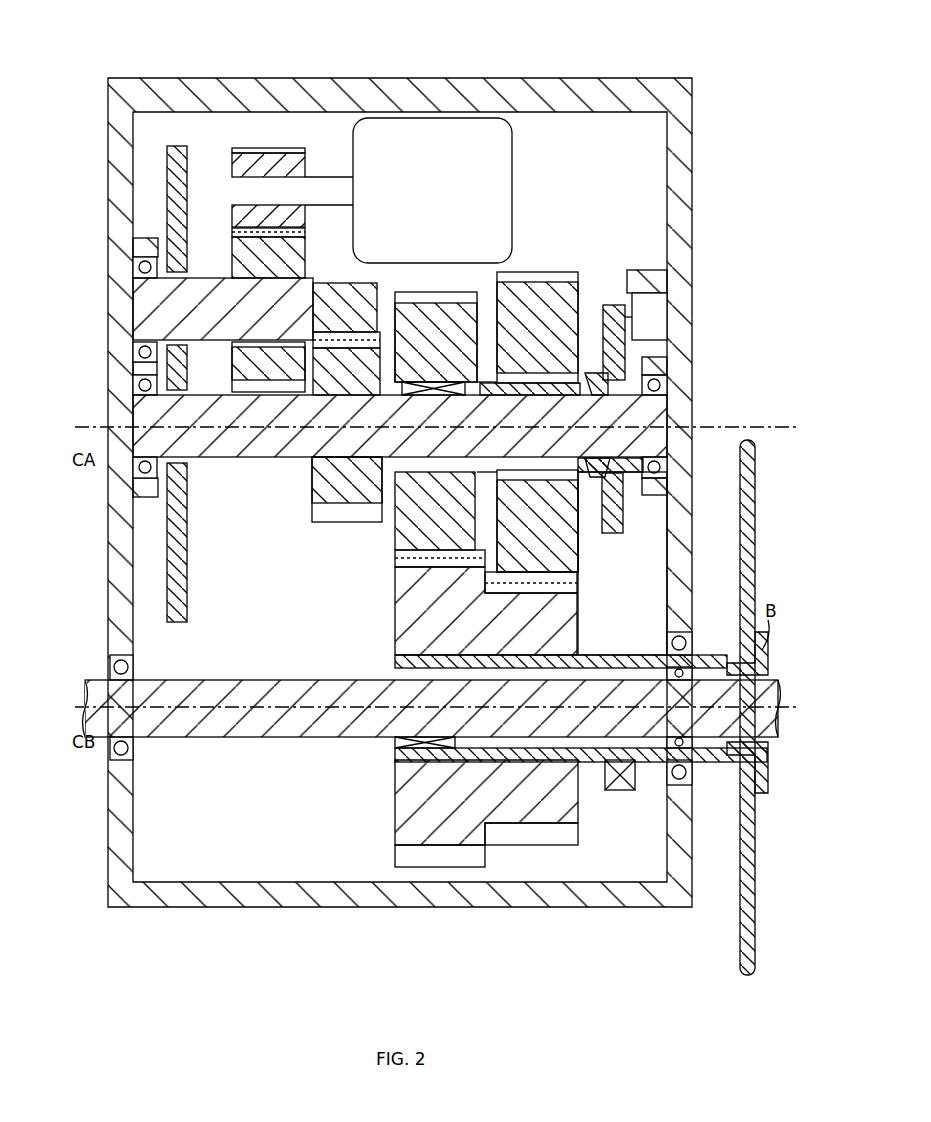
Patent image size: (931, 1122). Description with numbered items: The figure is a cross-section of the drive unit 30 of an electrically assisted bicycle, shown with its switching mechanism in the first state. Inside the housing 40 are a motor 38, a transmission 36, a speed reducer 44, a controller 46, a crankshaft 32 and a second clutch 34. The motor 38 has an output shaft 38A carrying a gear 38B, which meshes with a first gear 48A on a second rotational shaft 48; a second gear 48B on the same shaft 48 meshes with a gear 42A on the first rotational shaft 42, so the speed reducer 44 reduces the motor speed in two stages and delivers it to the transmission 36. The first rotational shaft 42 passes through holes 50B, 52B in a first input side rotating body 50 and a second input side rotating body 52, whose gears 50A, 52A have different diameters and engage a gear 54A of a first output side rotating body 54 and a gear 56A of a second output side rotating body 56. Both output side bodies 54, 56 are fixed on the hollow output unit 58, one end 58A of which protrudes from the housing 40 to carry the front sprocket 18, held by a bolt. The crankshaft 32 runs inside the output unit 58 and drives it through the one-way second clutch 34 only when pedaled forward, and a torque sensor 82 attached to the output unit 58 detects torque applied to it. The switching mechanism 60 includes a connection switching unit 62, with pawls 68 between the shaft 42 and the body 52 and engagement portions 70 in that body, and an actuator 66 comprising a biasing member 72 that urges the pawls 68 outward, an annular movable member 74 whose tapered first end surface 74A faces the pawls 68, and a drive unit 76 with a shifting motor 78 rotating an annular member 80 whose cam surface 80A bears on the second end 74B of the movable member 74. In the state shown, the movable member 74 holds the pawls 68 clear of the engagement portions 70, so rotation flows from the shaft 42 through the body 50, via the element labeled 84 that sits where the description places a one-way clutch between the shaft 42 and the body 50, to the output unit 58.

The drive unit 30 is at (722, 57).
The housing 40 is at (692, 152).
The motor 38 is at (512, 163).
The output shaft 38A is at (332, 176).
The gear 38B is at (262, 147).
The speed reducer 44 is at (222, 270).
The controller 46 is at (187, 572).
The second rotational shaft 48 is at (207, 345).
The first gear 48A is at (305, 220).
The second gear 48B is at (312, 272).
The first input side rotating body 50 is at (383, 330).
The gear 50A is at (393, 575).
The hole 50B is at (395, 400).
The second input side rotating body 52 is at (580, 300).
The gear 52A is at (580, 606).
The hole 52B is at (565, 395).
The first output side rotating body 54 is at (393, 618).
The gear 54A is at (395, 548).
The second output side rotating body 56 is at (578, 641).
The gear 56A is at (578, 575).
The output unit 58 is at (395, 661).
The one end 58A is at (730, 662).
The switching mechanism 60 is at (622, 580).
The connection switching unit 62 is at (630, 540).
The actuator 66 is at (630, 490).
The pawl 68 is at (603, 318).
The engagement portion 70 is at (487, 475).
The biasing member 72 is at (487, 380).
The movable member 74 is at (667, 482).
The first end surface 74A is at (615, 460).
The second end 74B is at (600, 395).
The drive unit 76 is at (710, 330).
The shifting motor 78 is at (660, 303).
The annular member 80 is at (667, 346).
The cam surface 80A is at (592, 478).
The torque sensor 82 is at (622, 790).
The bearing 84 is at (440, 395).
The first rotational shaft 42 is at (235, 457).
The gear 42A is at (322, 522).
The second clutch 34 is at (395, 740).
The crankshaft 32 is at (768, 750).
The front sprocket 18 is at (755, 488).
The transmission 36 is at (340, 598).